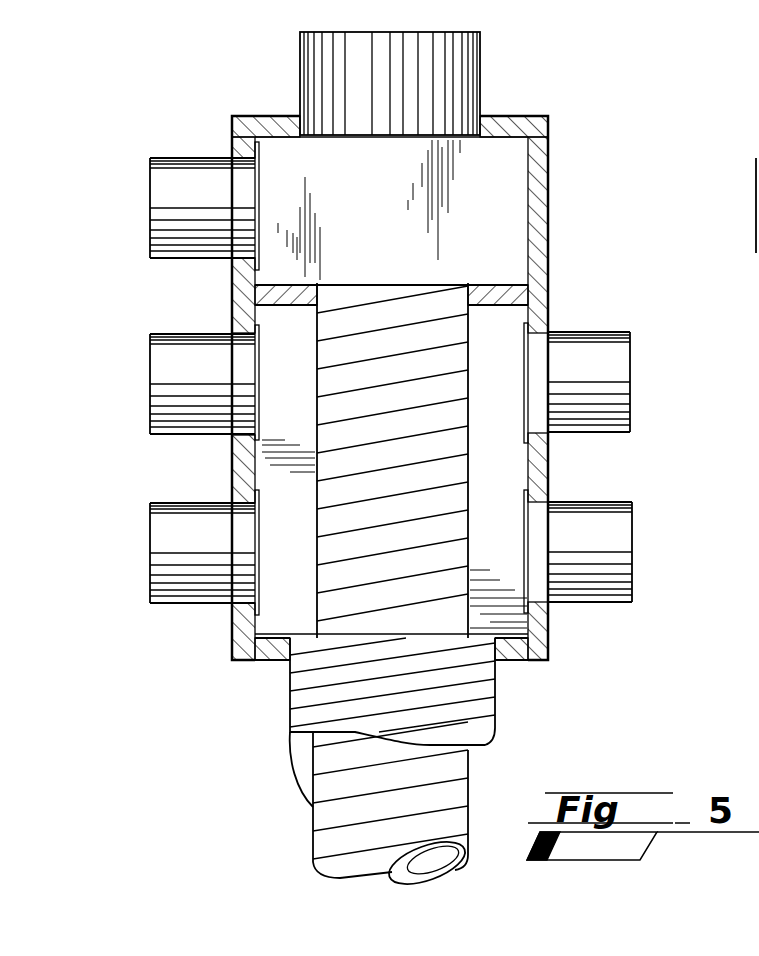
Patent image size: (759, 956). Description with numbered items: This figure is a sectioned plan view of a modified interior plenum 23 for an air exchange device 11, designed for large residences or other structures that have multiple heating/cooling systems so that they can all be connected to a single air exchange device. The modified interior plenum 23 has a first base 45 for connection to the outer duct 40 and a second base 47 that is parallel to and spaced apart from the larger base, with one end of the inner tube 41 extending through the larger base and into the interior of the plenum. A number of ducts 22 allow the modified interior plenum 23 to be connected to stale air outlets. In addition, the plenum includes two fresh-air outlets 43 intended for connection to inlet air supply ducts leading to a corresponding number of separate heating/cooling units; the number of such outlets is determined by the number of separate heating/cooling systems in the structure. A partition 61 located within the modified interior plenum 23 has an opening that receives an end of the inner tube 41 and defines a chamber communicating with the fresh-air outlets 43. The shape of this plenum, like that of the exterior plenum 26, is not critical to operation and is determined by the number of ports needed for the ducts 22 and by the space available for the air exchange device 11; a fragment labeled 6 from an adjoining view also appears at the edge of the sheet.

The second base 47 is at (354, 365).
The fresh-air outlets 43 is at (364, 145).
The ducts 22 is at (166, 350).
The partition 61 is at (492, 306).
The first base 45 is at (372, 701).
The inner tube 41 is at (470, 472).
The outer duct 40 is at (492, 742).
The modified interior plenum 23 is at (615, 690).
The exterior plenum 26 is at (723, 301).
The adjacent figure fragment 6 is at (751, 170).
The air exchange device 11 is at (746, 721).